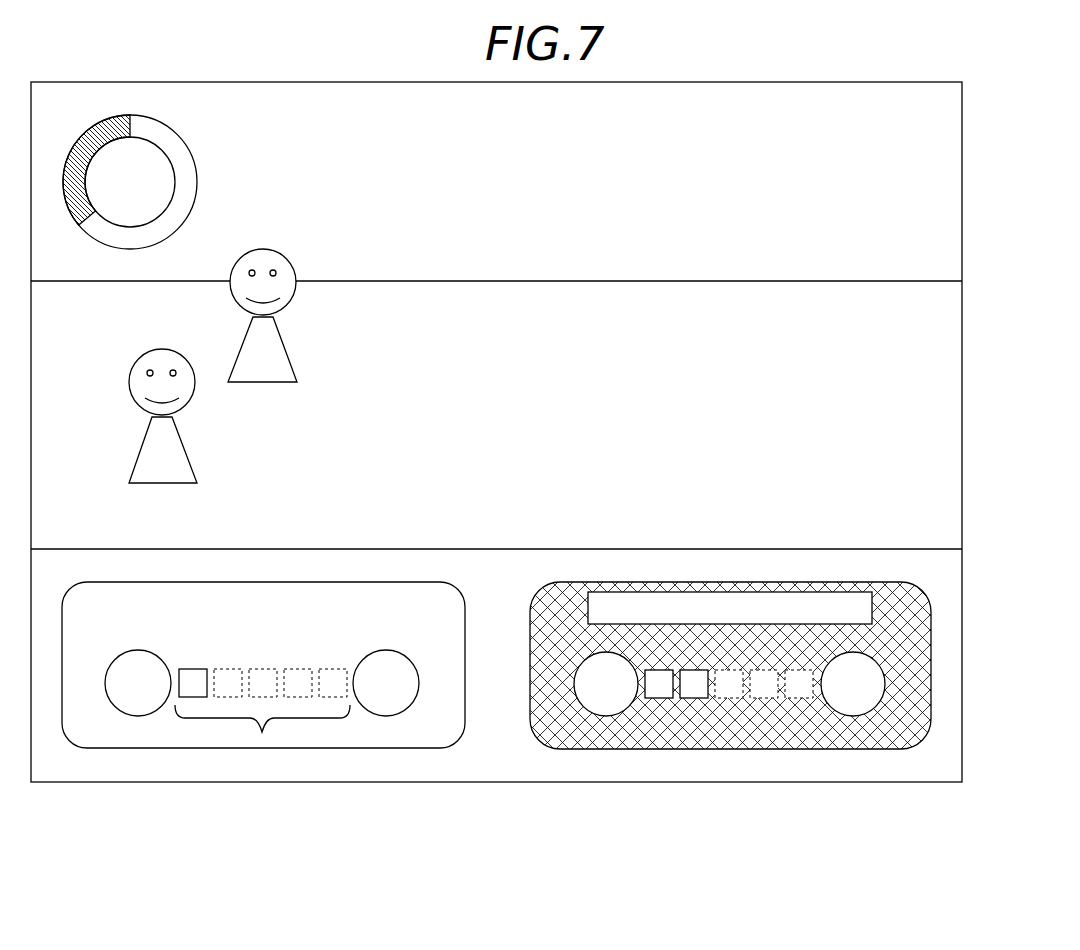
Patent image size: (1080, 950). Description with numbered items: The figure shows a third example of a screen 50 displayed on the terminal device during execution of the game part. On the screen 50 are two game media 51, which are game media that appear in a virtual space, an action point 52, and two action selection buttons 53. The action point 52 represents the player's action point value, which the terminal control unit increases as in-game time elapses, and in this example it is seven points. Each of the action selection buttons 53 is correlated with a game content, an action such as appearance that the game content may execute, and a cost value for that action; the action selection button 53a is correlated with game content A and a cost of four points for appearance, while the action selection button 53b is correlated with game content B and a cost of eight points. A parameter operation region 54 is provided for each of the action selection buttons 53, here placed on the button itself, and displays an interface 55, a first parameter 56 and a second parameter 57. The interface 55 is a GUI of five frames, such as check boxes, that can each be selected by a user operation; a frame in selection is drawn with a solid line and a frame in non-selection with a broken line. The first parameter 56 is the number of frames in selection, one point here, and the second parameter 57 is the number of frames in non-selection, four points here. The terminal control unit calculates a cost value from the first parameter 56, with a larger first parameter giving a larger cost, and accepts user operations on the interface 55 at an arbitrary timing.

The screen 50 is at (962, 137).
The game media 51 is at (290, 262).
The action point 52 is at (187, 143).
The action selection buttons 53 is at (496, 694).
The action selection button 53a is at (263, 695).
The action selection button 53b is at (777, 582).
The parameter operation region 54 is at (262, 778).
The interface 55 is at (262, 732).
The first parameter 56 is at (137, 717).
The second parameter 57 is at (386, 755).